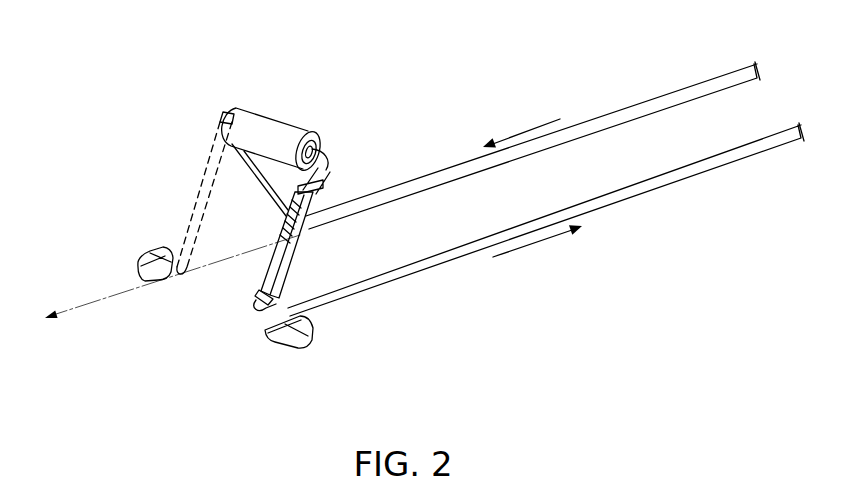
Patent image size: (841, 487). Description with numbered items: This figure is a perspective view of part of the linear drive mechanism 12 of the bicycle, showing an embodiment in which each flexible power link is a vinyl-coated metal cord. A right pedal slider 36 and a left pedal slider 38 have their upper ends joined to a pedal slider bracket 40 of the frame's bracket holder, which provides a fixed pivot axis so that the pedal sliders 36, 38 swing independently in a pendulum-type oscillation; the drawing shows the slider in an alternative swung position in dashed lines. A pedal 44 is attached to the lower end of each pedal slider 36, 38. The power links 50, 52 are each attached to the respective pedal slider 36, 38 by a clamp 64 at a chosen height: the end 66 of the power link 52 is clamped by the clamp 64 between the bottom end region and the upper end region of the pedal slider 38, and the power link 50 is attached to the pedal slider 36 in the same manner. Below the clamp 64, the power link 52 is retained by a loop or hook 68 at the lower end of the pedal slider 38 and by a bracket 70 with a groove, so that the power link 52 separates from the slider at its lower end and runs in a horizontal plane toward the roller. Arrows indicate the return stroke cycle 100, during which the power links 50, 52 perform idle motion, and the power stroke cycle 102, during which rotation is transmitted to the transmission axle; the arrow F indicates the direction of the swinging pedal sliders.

The linear drive mechanism 12 is at (546, 161).
The right pedal slider 36 is at (266, 167).
The left pedal slider 38 is at (287, 269).
The pedal slider bracket 40 is at (275, 122).
The pedal 44 is at (150, 247).
The power link 50 is at (730, 70).
The power link 52 is at (758, 152).
The clamp 64 is at (325, 190).
The end of the power link 66 is at (318, 174).
The loop or hook 68 is at (260, 307).
The bracket 70 is at (261, 292).
The return stroke cycle 100 is at (523, 128).
The power stroke cycle 102 is at (548, 252).
The force axis F is at (172, 275).